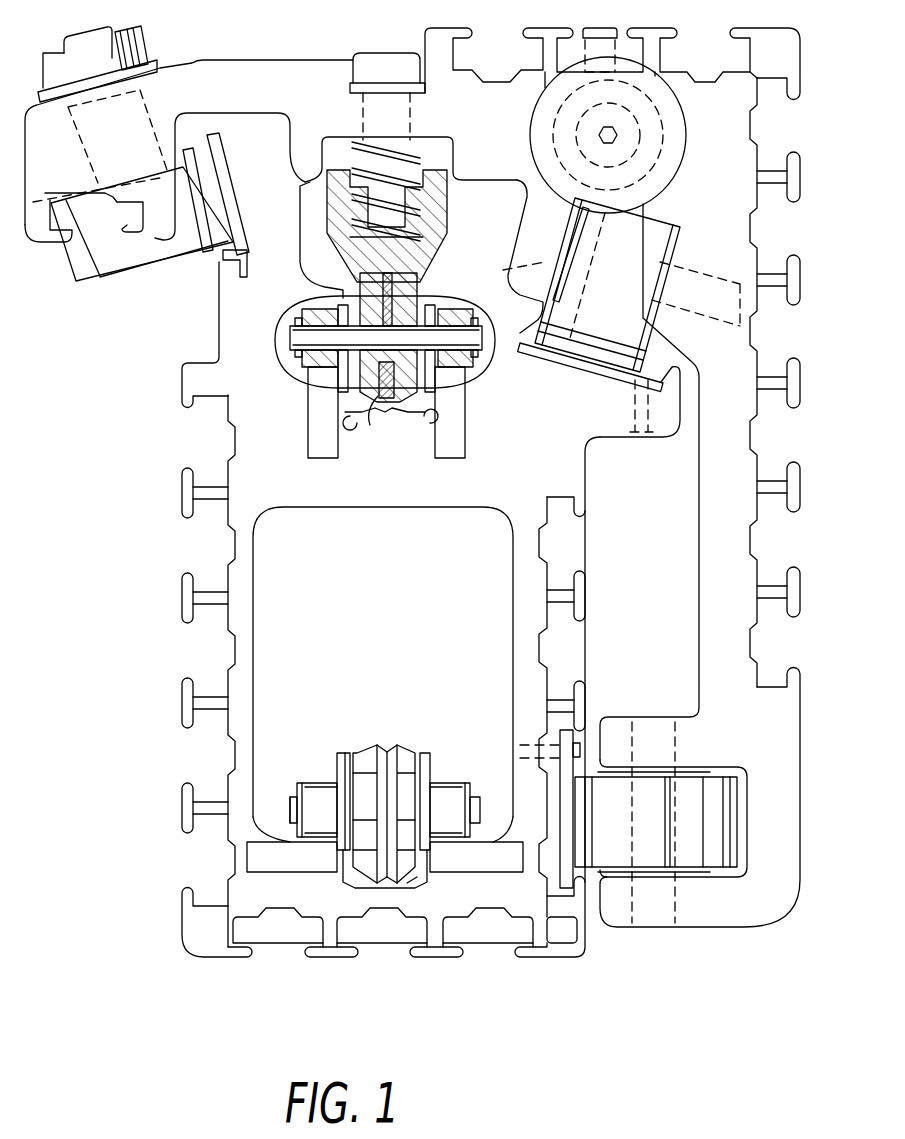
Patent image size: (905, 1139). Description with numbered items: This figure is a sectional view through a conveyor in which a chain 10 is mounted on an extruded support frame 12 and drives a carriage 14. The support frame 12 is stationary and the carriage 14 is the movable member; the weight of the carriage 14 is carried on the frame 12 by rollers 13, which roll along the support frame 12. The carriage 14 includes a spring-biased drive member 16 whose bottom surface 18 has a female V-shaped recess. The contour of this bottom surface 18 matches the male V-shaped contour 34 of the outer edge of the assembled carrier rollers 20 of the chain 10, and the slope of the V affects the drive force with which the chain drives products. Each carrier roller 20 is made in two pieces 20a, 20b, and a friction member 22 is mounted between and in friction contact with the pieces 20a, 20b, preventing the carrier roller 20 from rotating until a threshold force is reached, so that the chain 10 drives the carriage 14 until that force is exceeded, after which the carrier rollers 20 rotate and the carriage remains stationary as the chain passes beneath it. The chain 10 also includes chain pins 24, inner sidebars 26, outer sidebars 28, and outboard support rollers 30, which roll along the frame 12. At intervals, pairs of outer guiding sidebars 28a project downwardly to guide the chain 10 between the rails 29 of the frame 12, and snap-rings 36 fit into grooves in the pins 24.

The chain 10 is at (280, 331).
The extruded support frame 12 is at (240, 498).
The rollers 13 is at (88, 262).
The carriage 14 is at (727, 148).
The spring-biased drive member 16 is at (437, 213).
The bottom surface 18 is at (322, 263).
The carrier roller 20 is at (370, 425).
The carrier roller piece 20a is at (362, 866).
The carrier roller piece 20b is at (412, 878).
The friction member 22 is at (400, 395).
The chain pins 24 is at (300, 330).
The inner sidebars 26 is at (417, 285).
The outer sidebars 28 is at (520, 738).
The outer guiding sidebars 28a is at (343, 385).
The rails 29 is at (315, 415).
The outboard support rollers 30 is at (523, 260).
The male V-shaped drive surface 34 is at (409, 742).
The snap-rings 36 is at (290, 793).